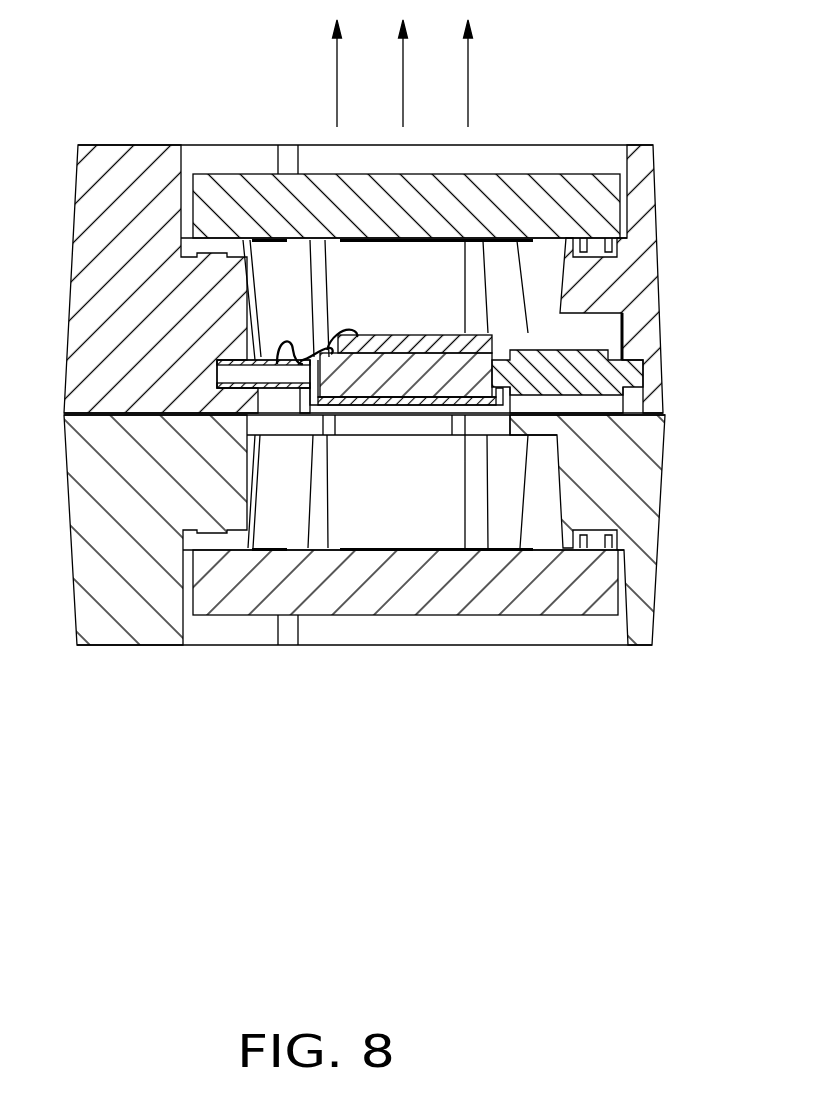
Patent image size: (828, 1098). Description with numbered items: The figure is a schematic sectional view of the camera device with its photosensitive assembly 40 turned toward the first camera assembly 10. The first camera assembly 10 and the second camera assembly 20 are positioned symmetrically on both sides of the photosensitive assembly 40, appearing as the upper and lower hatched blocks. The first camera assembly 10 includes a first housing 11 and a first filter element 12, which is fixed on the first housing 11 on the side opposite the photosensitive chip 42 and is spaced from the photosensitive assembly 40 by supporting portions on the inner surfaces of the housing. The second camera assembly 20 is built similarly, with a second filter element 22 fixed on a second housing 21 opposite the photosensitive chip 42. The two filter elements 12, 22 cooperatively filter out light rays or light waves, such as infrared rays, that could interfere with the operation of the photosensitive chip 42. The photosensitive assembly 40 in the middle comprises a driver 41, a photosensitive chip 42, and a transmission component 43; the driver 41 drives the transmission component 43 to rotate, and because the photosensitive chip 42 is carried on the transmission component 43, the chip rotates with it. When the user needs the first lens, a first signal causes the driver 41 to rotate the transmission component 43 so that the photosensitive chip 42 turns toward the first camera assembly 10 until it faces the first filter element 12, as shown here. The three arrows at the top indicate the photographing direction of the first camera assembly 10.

The first camera assembly 10 is at (424, 279).
The first housing 11 is at (588, 283).
The first filter element 12 is at (565, 202).
The second camera assembly 20 is at (422, 530).
The second housing 21 is at (632, 506).
The second filter element 22 is at (590, 585).
The photosensitive assembly 40 is at (500, 370).
The driver 41 is at (570, 375).
The photosensitive chip 42 is at (470, 338).
The transmission component 43 is at (460, 399).